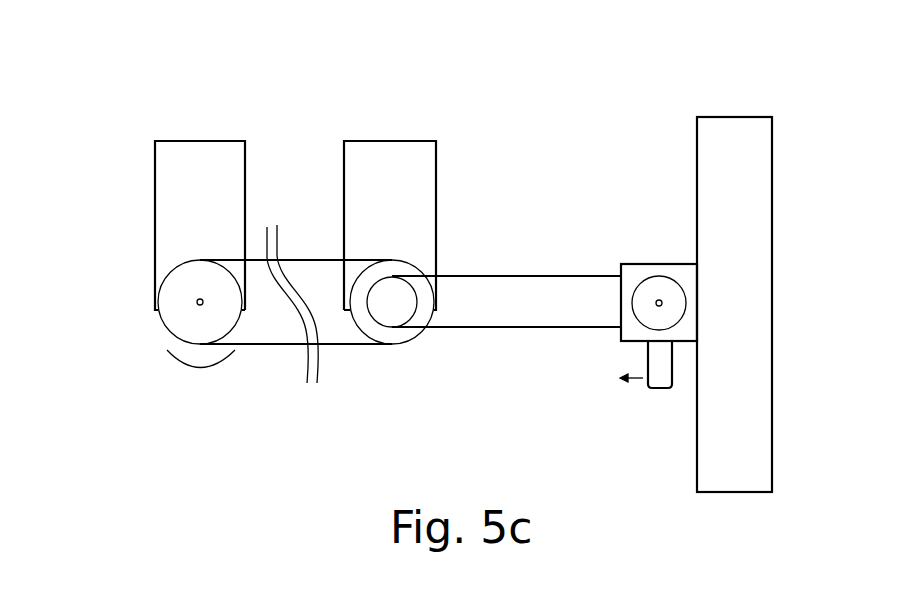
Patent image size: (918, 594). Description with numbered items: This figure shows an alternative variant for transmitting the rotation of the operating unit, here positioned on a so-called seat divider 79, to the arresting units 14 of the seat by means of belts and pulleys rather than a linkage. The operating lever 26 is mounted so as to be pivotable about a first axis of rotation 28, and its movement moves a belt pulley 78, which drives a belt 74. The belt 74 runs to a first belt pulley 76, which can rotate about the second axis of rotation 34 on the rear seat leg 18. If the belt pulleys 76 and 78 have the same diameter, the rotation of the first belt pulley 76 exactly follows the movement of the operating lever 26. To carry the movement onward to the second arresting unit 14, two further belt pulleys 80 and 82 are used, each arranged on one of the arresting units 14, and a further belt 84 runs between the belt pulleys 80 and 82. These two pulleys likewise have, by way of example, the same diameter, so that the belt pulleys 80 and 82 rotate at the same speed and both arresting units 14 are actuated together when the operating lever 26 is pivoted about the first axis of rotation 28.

The arresting unit 14 is at (288, 181).
The rear seat leg 18 is at (211, 167).
The operating lever 26 is at (655, 352).
The first axis of rotation 28 is at (659, 300).
The second axis of rotation 34 is at (378, 323).
The belt 74 is at (516, 325).
The first belt pulley 76 is at (412, 309).
The belt pulley 78 is at (641, 272).
The seat divider 79 is at (730, 127).
The belt pulley 80 is at (372, 322).
The belt pulley 82 is at (175, 318).
The further belt 84 is at (258, 346).